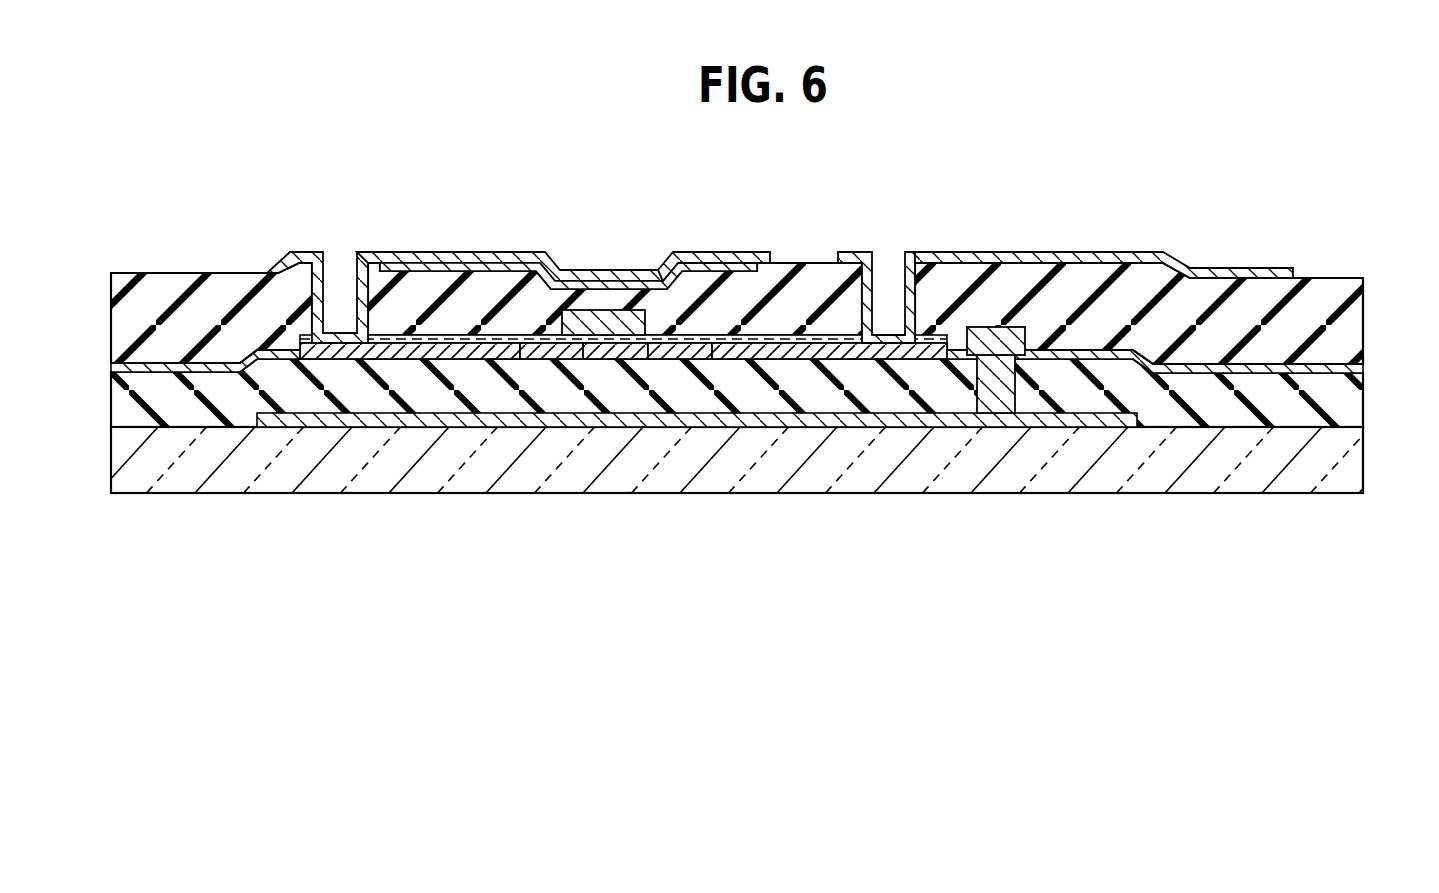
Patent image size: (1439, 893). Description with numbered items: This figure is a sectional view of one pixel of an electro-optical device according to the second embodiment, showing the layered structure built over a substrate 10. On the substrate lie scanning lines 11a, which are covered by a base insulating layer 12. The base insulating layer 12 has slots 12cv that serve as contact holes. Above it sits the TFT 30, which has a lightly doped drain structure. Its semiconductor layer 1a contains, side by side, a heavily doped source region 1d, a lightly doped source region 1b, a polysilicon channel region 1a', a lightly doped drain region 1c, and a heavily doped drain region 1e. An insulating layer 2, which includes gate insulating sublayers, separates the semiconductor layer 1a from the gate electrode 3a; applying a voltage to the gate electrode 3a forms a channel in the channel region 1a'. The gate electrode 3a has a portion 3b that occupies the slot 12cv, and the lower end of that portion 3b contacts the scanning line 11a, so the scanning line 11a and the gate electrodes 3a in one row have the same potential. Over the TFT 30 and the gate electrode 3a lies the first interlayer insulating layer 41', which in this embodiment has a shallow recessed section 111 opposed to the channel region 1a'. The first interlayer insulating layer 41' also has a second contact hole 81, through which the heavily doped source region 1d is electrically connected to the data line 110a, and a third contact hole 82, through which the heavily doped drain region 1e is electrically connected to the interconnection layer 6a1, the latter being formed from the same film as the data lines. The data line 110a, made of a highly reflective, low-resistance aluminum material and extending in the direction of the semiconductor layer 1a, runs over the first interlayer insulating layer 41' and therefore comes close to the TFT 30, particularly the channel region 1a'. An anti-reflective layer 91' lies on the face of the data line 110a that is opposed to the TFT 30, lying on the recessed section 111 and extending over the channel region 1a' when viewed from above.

The substrate 10 is at (1352, 472).
The base insulating layer 12 is at (1352, 403).
The slot 12cv is at (1003, 390).
The scanning line 11a is at (902, 422).
The semiconductor layer 1a is at (737, 444).
The channel region 1a' is at (615, 441).
The lightly doped source region 1b is at (550, 360).
The lightly doped drain region 1c is at (673, 360).
The heavily doped source region 1d is at (487, 360).
The heavily doped drain region 1e is at (829, 441).
The TFT 30 is at (623, 461).
The insulating layer 2 is at (797, 336).
The gate electrode 3a is at (598, 312).
The portion of gate electrode 3b is at (997, 332).
The first interlayer insulating layer 41' is at (772, 313).
The second contact hole 81 is at (358, 297).
The third contact hole 82 is at (912, 296).
The data line 110a is at (412, 256).
The anti-reflective layer 91' is at (568, 240).
The recessed section 111 is at (657, 268).
The interconnection layer 6a1 is at (1117, 262).